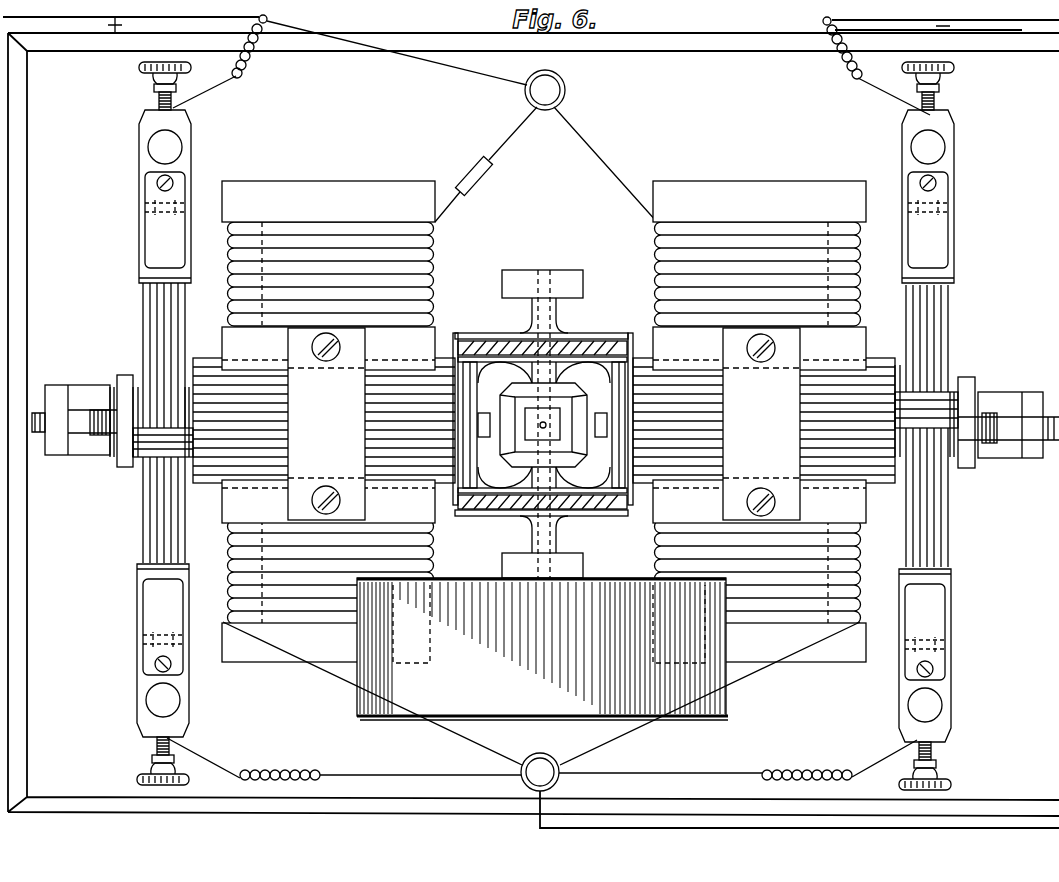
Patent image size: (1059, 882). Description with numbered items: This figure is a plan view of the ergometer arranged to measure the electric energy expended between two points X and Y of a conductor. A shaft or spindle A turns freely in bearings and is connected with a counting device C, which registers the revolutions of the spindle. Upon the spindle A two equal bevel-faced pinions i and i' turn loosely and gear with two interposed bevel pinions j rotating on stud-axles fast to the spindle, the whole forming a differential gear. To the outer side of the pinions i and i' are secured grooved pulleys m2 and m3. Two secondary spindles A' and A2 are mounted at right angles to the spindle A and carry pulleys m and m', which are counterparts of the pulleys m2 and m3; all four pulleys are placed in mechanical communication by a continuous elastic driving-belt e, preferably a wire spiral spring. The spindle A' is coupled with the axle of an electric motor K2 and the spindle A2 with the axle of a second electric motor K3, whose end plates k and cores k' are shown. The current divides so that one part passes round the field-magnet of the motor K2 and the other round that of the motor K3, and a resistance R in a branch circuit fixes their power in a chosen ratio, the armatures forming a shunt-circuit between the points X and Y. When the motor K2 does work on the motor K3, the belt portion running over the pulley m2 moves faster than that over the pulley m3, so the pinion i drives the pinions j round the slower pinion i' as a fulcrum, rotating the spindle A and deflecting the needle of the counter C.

The measuring point X is at (274, 19).
The measuring point Y is at (815, 21).
The electrical resistance R is at (475, 176).
The second electric motor K3 is at (328, 433).
The electric motor K2 is at (759, 433).
The coil end plates k is at (544, 425).
The magnet core k' is at (544, 410).
The shaft or spindle A is at (542, 415).
The secondary axle or spindle A' is at (810, 409).
The secondary axle or spindle A2 is at (78, 418).
The grooved pulley m3 is at (541, 327).
The grooved pulley m2 is at (541, 523).
The pulley or grooved wheel m is at (609, 425).
The pulley or grooved wheel m' is at (481, 430).
The continuous driving-belt e is at (578, 352).
The bevel-faced pinion i is at (544, 427).
The bevel-faced pinion i' is at (544, 425).
The bevel-faced pinion j is at (590, 399).
The counting device C is at (542, 649).